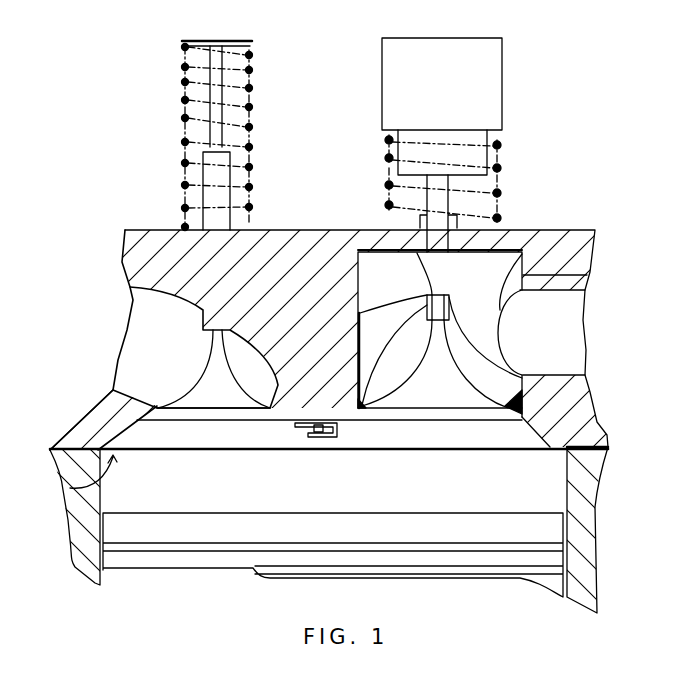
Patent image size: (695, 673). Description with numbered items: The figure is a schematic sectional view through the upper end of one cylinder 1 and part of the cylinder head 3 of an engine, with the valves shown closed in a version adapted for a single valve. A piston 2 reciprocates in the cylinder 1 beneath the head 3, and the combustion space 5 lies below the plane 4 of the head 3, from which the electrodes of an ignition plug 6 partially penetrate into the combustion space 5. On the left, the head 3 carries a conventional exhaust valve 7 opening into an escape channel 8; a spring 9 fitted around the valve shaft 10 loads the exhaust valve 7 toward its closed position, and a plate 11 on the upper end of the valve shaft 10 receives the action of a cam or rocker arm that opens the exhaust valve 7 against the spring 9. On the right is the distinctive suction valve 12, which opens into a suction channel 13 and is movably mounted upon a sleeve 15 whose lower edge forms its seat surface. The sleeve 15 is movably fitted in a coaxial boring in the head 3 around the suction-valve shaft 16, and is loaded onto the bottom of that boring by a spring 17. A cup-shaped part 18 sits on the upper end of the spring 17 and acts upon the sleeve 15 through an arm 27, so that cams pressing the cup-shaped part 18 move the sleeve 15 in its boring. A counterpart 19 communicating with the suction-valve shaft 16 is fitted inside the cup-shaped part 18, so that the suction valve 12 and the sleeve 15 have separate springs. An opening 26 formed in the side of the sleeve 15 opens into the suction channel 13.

The cylinder 1 is at (110, 500).
The piston 2 is at (110, 530).
The cylinder head 3 is at (93, 427).
The plane 4 is at (70, 487).
The combustion space 5 is at (285, 440).
The ignition plug 6 is at (328, 440).
The exhaust valve 7 is at (222, 452).
The escape channel 8 is at (133, 323).
The spring 9 is at (185, 163).
The valve shaft 10 is at (210, 130).
The plate 11 is at (195, 40).
The suction valve 12 is at (465, 412).
The suction channel 13 is at (570, 333).
The sleeve 15 is at (372, 422).
The suction-valve shaft 16 is at (400, 247).
The spring 17 is at (497, 168).
The cup-shaped part 18 is at (490, 75).
The counterpart 19 is at (480, 150).
The opening 26 is at (515, 283).
The arm 27 is at (430, 195).